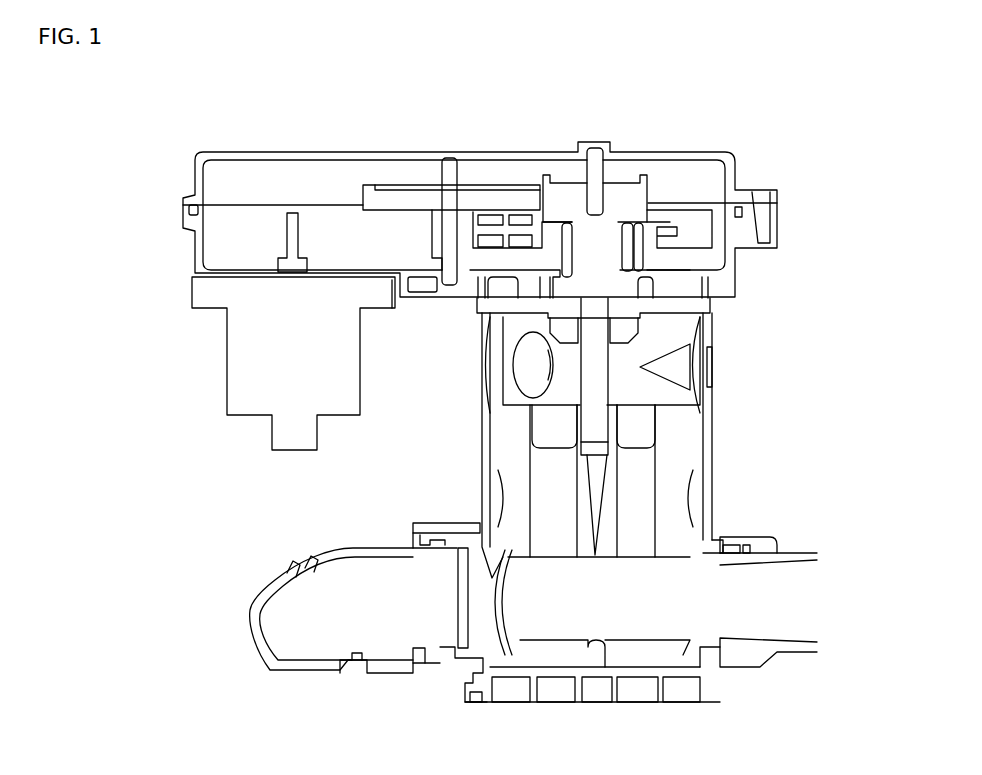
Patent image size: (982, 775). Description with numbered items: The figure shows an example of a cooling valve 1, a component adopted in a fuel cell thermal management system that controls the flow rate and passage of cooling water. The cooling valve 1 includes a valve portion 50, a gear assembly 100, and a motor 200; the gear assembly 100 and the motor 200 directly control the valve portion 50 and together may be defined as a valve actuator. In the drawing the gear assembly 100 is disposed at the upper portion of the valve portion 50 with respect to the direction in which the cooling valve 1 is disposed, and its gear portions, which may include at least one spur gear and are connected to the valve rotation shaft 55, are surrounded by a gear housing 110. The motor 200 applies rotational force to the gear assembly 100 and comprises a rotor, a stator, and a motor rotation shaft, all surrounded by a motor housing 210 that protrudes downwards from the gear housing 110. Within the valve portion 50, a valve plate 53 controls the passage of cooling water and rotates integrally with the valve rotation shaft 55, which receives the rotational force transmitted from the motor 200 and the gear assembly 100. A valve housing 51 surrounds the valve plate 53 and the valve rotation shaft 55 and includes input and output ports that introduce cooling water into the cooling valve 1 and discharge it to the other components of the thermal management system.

The cooling valve 1 is at (445, 126).
The gear assembly 100 is at (187, 171).
The gear housing 110 is at (727, 158).
The motor 200 is at (188, 284).
The motor housing 210 is at (213, 312).
The valve portion 50 is at (721, 389).
The valve plate 53 is at (672, 333).
The valve rotation shaft 55 is at (600, 390).
The valve housing 51 is at (715, 486).